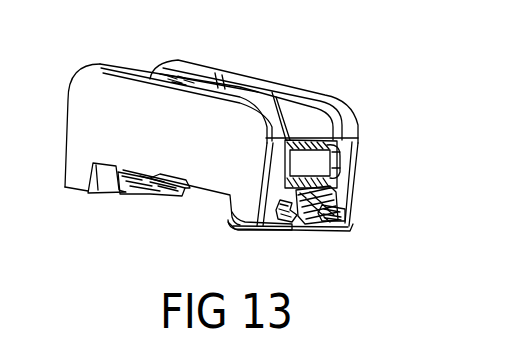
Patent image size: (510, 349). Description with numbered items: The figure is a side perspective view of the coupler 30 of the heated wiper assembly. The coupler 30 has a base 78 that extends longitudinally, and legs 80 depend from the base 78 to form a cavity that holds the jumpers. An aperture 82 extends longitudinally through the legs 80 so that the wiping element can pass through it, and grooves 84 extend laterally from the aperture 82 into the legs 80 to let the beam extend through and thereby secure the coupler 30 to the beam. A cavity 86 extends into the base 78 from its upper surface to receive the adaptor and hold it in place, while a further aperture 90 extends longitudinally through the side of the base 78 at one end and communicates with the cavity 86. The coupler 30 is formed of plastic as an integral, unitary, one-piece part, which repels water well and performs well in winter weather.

The coupler 30 is at (383, 105).
The base 78 is at (117, 137).
The legs 80 is at (235, 200).
The aperture 82 is at (328, 218).
The grooves 84 is at (335, 212).
The cavity 86 is at (299, 106).
The aperture 90 is at (337, 167).